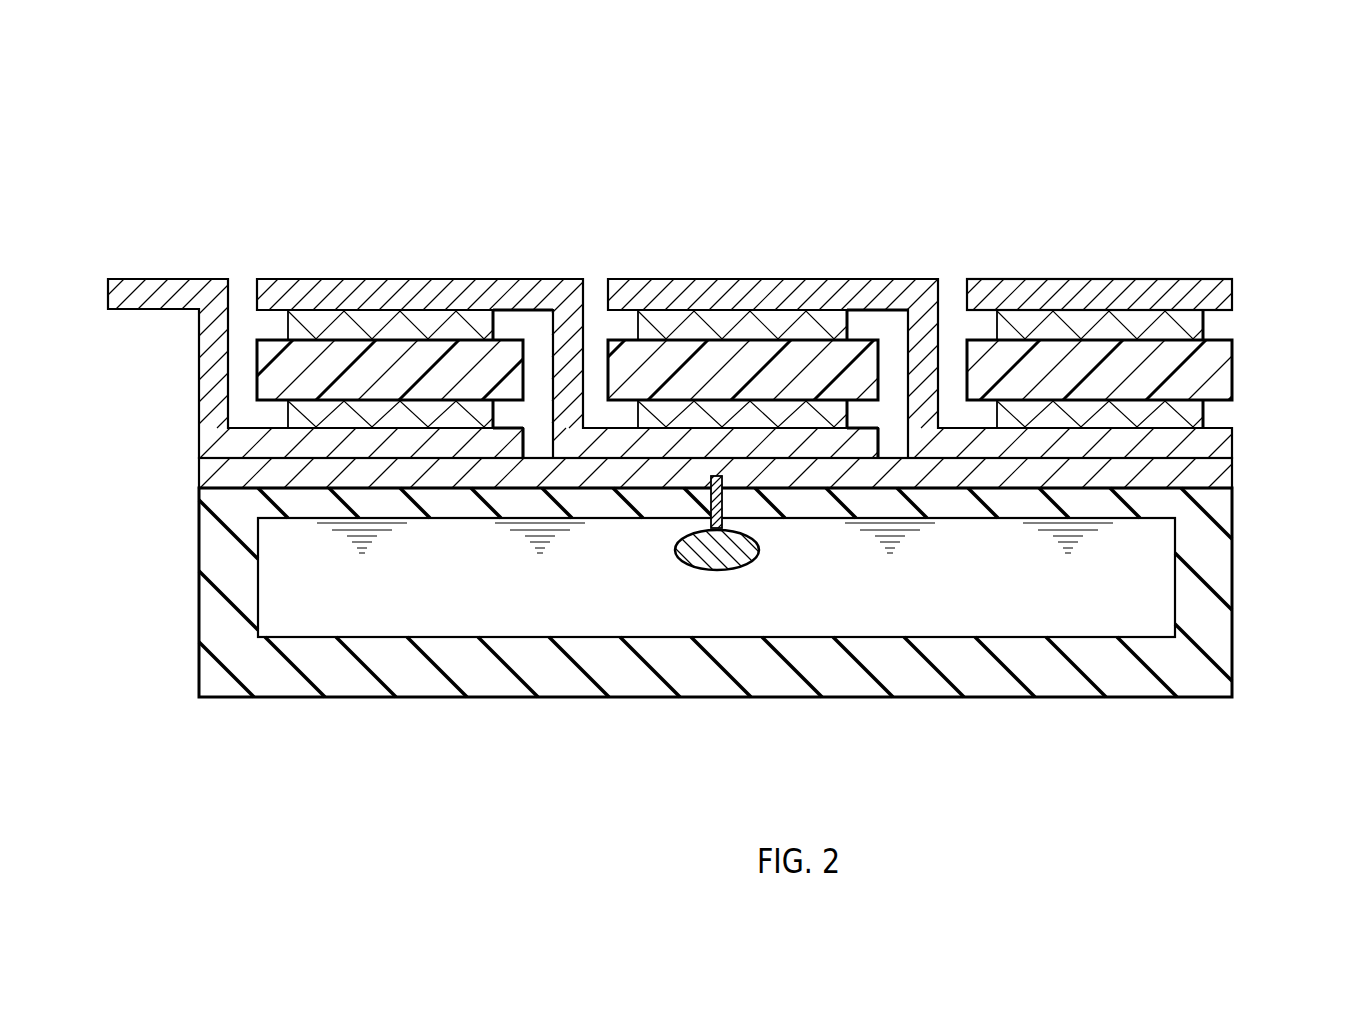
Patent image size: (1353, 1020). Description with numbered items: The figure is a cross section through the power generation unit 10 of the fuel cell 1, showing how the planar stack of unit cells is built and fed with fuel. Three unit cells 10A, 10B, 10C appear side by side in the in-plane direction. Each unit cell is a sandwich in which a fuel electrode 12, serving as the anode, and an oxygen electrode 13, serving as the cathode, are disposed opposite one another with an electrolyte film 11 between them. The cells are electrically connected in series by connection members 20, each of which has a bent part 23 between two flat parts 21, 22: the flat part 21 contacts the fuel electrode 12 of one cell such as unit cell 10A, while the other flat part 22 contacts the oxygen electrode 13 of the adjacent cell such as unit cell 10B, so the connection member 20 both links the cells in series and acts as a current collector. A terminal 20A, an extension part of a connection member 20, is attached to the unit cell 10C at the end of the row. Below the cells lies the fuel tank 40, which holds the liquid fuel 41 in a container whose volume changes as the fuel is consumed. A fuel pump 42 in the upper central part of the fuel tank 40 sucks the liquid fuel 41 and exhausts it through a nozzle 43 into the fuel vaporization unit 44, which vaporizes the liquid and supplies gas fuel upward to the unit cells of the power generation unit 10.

The fuel cell 1 is at (1212, 117).
The power generation unit 10 is at (1157, 278).
The unit cell 10A is at (360, 218).
The unit cell 10B is at (715, 218).
The unit cell 10C is at (1128, 278).
The electrolyte film 11 is at (1213, 368).
The fuel electrode 12 is at (1143, 415).
The oxygen electrode 13 is at (1190, 325).
The connection member 20 is at (744, 311).
The terminal 20A is at (163, 284).
The flat part 21 is at (428, 284).
The flat part 22 is at (600, 445).
The bent part 23 is at (573, 348).
The fuel tank 40 is at (1227, 620).
The liquid fuel 41 is at (1143, 545).
The fuel pump 42 is at (718, 582).
The nozzle 43 is at (712, 500).
The fuel vaporization unit 44 is at (1227, 473).